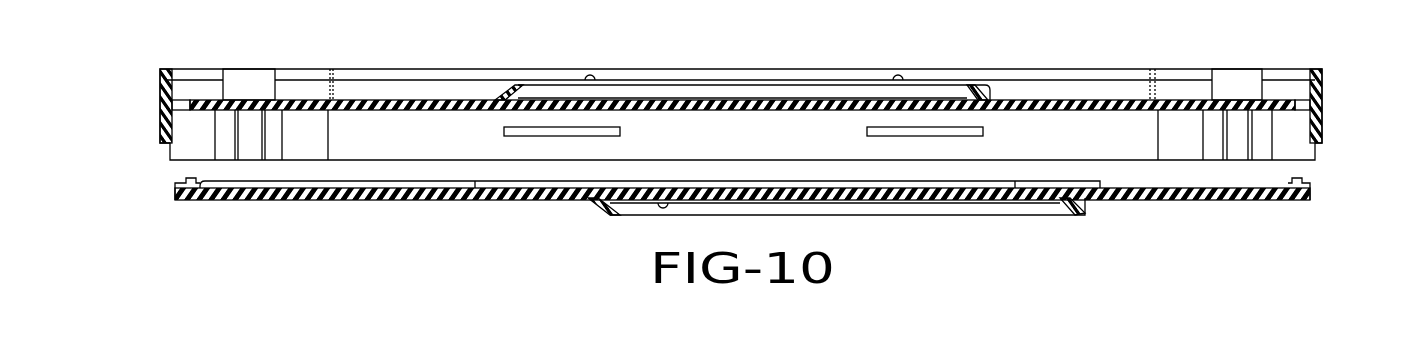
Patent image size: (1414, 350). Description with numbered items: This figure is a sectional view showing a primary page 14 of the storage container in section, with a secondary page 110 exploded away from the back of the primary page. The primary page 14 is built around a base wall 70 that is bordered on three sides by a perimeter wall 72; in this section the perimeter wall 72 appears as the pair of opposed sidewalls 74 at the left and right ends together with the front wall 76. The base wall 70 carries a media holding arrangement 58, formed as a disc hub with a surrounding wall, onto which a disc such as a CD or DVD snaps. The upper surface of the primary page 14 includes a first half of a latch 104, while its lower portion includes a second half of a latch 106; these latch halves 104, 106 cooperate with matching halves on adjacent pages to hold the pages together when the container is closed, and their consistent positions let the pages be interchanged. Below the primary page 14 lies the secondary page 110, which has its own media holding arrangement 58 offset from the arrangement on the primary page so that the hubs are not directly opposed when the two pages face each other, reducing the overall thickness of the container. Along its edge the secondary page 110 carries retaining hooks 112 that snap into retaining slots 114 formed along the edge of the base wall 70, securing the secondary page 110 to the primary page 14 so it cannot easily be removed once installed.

The first primary page 14 is at (986, 58).
The media holding arrangement 58 is at (632, 90).
The base wall 70 is at (420, 105).
The perimeter wall 72 is at (370, 152).
The sidewalls 74 is at (160, 100).
The front wall 76 is at (436, 150).
The first half of a latch 104 is at (250, 85).
The second half of a latch 106 is at (248, 148).
The secondary page 110 is at (1275, 202).
The retaining hooks 112 is at (183, 180).
The retaining slots 114 is at (182, 108).